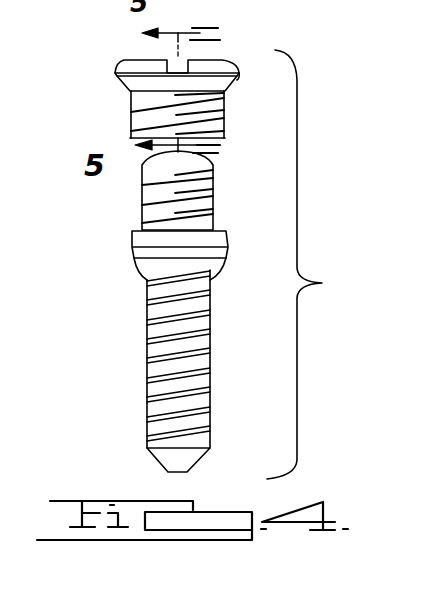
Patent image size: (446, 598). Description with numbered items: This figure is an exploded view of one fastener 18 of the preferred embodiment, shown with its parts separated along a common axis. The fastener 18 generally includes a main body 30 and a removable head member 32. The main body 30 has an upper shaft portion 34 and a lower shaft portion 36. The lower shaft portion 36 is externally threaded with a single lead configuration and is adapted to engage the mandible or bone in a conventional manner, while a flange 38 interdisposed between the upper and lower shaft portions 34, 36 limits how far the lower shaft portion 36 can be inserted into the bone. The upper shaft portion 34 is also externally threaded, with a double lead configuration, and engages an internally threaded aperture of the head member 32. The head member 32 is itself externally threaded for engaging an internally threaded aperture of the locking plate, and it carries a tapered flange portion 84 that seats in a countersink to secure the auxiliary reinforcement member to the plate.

The fastener 18 is at (313, 264).
The main body 30 is at (130, 260).
The head member 32 is at (125, 95).
The upper shaft portion 34 is at (212, 188).
The lower shaft portion 36 is at (148, 368).
The flange 38 is at (226, 238).
The tapered flange portion 84 is at (239, 81).